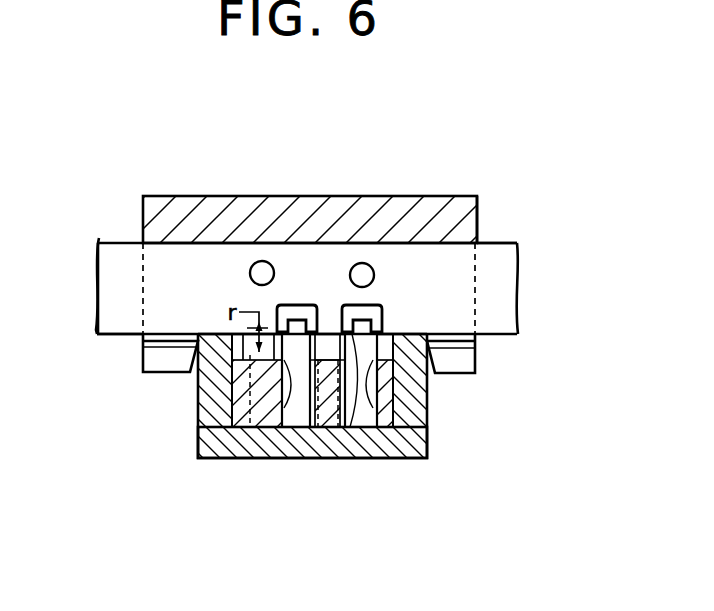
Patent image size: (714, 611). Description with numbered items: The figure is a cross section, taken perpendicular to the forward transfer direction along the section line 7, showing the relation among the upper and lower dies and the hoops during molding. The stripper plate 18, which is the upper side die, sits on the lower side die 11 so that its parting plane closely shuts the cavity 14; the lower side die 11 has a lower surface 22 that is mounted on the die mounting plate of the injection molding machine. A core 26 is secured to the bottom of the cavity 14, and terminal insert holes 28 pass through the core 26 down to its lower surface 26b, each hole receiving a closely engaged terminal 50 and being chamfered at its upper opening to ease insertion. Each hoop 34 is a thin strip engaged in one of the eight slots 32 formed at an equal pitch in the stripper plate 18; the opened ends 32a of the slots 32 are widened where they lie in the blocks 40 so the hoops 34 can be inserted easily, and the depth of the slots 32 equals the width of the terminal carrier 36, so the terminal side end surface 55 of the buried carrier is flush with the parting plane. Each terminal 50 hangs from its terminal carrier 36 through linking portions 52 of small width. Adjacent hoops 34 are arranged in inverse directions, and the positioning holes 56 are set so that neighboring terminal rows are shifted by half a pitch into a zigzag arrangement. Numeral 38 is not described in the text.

The section line 7 is at (340, 153).
The lower side die 11 is at (199, 473).
The cavity 14 is at (392, 372).
The stripper plate 18 is at (222, 186).
The lower surface 22 is at (420, 460).
The core 26 is at (392, 390).
The lower surface of core 26b is at (278, 422).
The terminal insert holes 28 is at (256, 430).
The slots 32 is at (452, 288).
The opened ends of slots 32a is at (158, 368).
The hoop 34 is at (497, 243).
The terminal carrier 36 is at (126, 262).
The component body 38 is at (466, 196).
The blocks 40 is at (143, 353).
The terminals 50 is at (197, 380).
The linking portions 52 is at (287, 305).
The terminal side end surface 55 is at (120, 340).
The positioning holes 56 is at (251, 279).